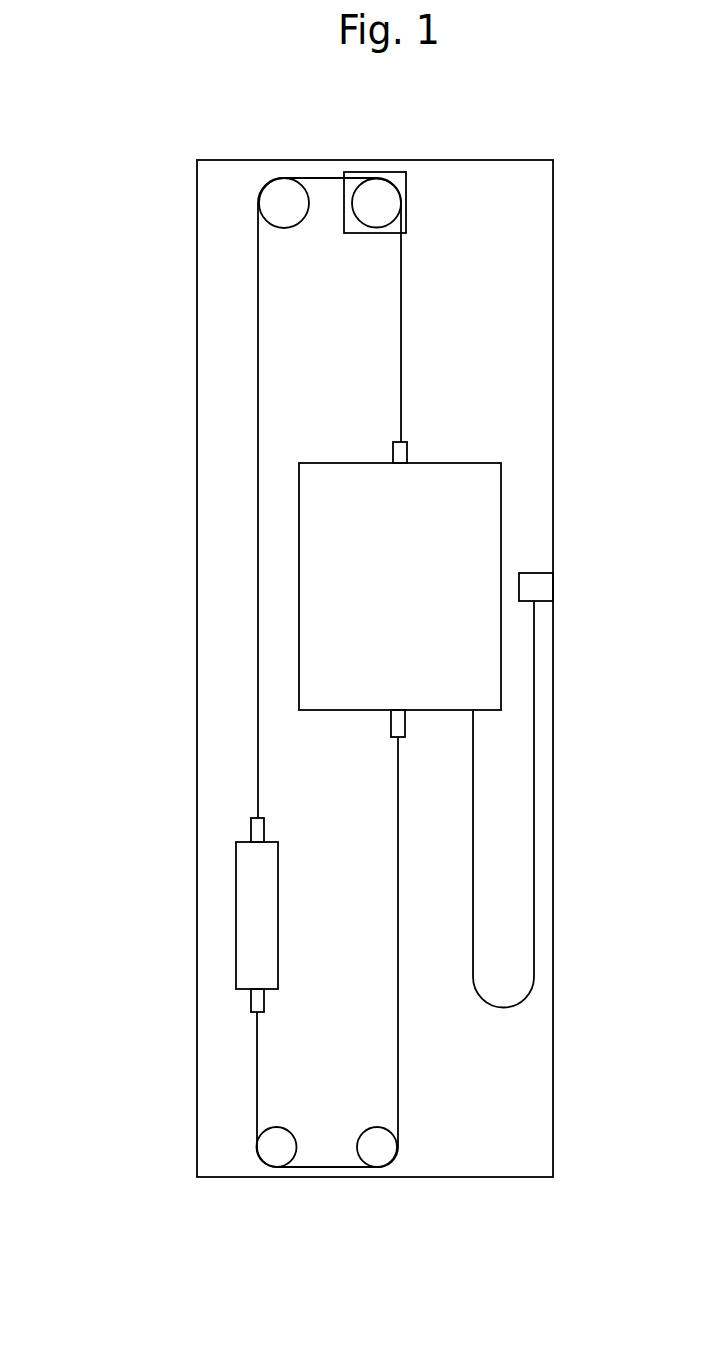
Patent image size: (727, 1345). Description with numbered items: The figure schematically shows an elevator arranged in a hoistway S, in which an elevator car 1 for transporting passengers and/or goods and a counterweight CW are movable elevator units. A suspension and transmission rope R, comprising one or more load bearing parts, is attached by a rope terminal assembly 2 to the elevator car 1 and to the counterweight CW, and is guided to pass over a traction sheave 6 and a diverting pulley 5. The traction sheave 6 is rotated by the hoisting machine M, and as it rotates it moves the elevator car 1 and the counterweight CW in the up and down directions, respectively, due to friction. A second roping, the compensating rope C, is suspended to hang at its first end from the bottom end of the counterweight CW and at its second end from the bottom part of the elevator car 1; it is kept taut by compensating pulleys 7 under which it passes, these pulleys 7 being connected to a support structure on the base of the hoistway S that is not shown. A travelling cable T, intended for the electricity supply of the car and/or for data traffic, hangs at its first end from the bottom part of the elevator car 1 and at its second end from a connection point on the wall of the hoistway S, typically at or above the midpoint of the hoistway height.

The elevator car 1 is at (389, 609).
The rope terminal assembly 2 is at (413, 443).
The diverting pulley 5 is at (295, 215).
The traction sheave 6 is at (375, 203).
The compensating pulleys 7 is at (378, 1155).
The suspension and transmission rope R is at (258, 418).
The hoisting machine M is at (427, 248).
The hoistway S is at (320, 825).
The compensating rope C is at (397, 973).
The counterweight CW is at (252, 912).
The travelling cable T is at (490, 1007).